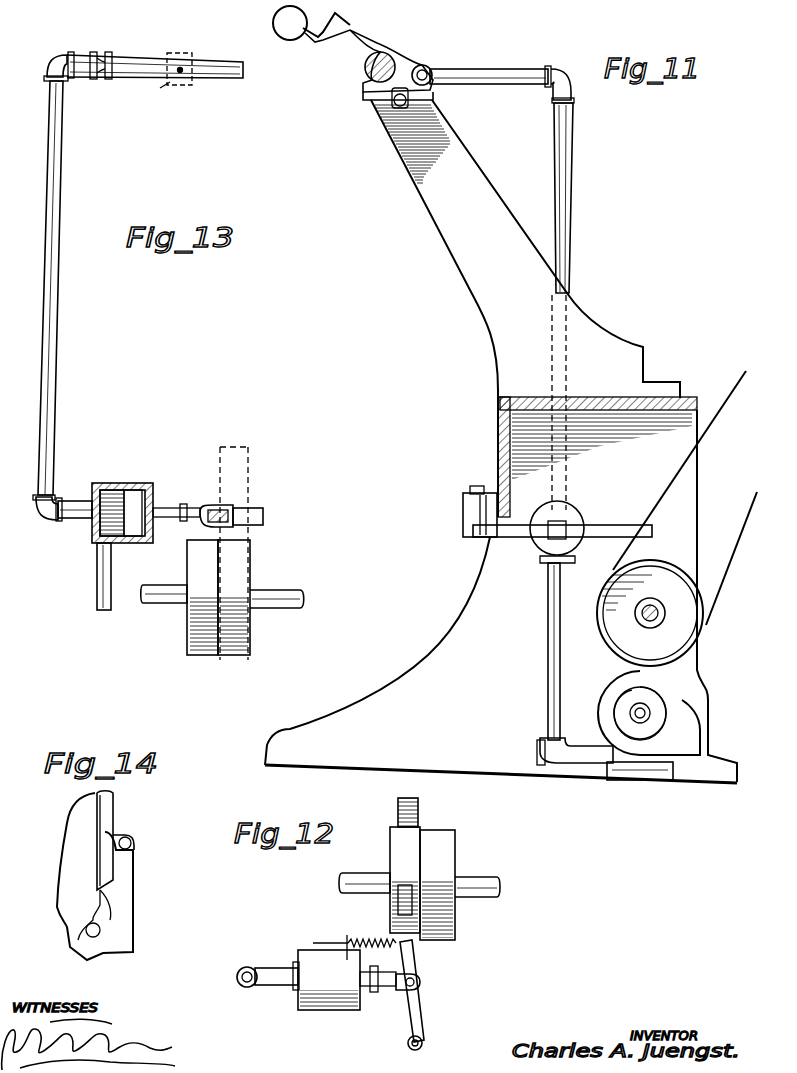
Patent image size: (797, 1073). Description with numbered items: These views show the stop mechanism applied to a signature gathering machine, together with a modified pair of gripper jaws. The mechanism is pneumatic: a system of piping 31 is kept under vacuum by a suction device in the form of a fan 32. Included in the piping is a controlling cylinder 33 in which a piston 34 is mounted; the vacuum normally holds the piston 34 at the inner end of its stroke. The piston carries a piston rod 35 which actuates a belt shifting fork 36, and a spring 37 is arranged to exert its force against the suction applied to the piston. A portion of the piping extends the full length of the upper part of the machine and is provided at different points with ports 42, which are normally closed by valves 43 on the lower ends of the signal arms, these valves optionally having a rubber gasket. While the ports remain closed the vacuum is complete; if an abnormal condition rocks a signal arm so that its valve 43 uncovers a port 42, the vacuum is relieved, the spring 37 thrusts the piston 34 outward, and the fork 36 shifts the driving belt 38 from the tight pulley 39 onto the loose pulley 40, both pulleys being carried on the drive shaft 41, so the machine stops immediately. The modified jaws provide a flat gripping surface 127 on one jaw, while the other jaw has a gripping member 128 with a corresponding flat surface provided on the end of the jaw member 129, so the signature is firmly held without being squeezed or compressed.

In FIG. 11, the system of piping 31 is at (556, 148).
In FIG. 11, the fan 32 is at (606, 690).
In FIG. 11, the cylinder 33 is at (480, 511).
In FIG. 13, the cylinder 33 is at (108, 483).
In FIG. 12, the cylinder 33 is at (312, 1010).
In FIG. 13, the piston 34 is at (132, 535).
In FIG. 13, the piston rod 35 is at (175, 506).
In FIG. 12, the piston rod 35 is at (395, 990).
In FIG. 11, the belt shifting fork 36 is at (604, 512).
In FIG. 13, the belt shifting fork 36 is at (265, 512).
In FIG. 12, the belt shifting fork 36 is at (414, 965).
In FIG. 12, the spring 37 is at (370, 938).
In FIG. 11, the driving belt 38 is at (715, 408).
In FIG. 13, the driving belt 38 is at (255, 455).
In FIG. 12, the driving belt 38 is at (397, 805).
In FIG. 13, the tight pulley 39 is at (188, 635).
In FIG. 12, the tight pulley 39 is at (397, 852).
In FIG. 13, the loose pulley 40 is at (250, 565).
In FIG. 12, the loose pulley 40 is at (450, 830).
In FIG. 11, the drive shaft 41 is at (660, 615).
In FIG. 13, the drive shaft 41 is at (152, 600).
In FIG. 12, the drive shaft 41 is at (500, 880).
In FIG. 11, the ports 42 is at (428, 67).
In FIG. 13, the ports 42 is at (179, 73).
In FIG. 11, the valves 43 is at (436, 94).
In FIG. 13, the valves 43 is at (163, 87).
In FIG. 14, the flat gripping surface 127 is at (95, 838).
In FIG. 14, the gripping member 128 is at (112, 815).
In FIG. 14, the jaw member 129 is at (130, 878).